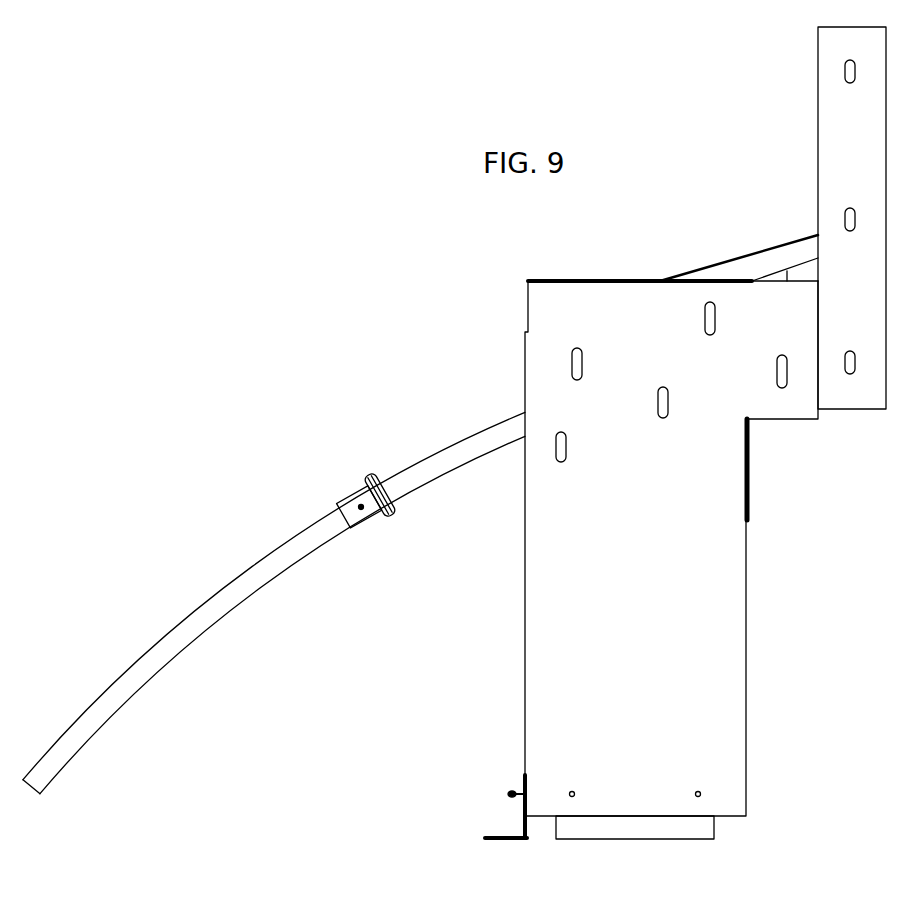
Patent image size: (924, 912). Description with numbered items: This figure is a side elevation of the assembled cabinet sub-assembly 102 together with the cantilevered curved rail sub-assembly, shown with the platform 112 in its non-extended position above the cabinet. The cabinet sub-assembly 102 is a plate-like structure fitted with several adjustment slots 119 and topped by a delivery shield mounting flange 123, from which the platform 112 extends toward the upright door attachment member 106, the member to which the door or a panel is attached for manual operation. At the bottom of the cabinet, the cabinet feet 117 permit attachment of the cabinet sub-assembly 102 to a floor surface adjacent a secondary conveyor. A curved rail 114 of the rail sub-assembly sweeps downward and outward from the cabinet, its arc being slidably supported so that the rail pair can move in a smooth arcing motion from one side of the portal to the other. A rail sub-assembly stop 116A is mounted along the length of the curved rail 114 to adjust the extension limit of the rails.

The cabinet sub-assembly 102 is at (708, 565).
The door attachment member 106 is at (830, 107).
The platform 112 is at (752, 262).
The curved rail 114 is at (203, 605).
The rail sub-assembly stop 116A is at (365, 476).
The cabinet feet 117 is at (500, 830).
The adjustment slots 119 is at (705, 318).
The delivery shield mounting flange 123 is at (572, 280).